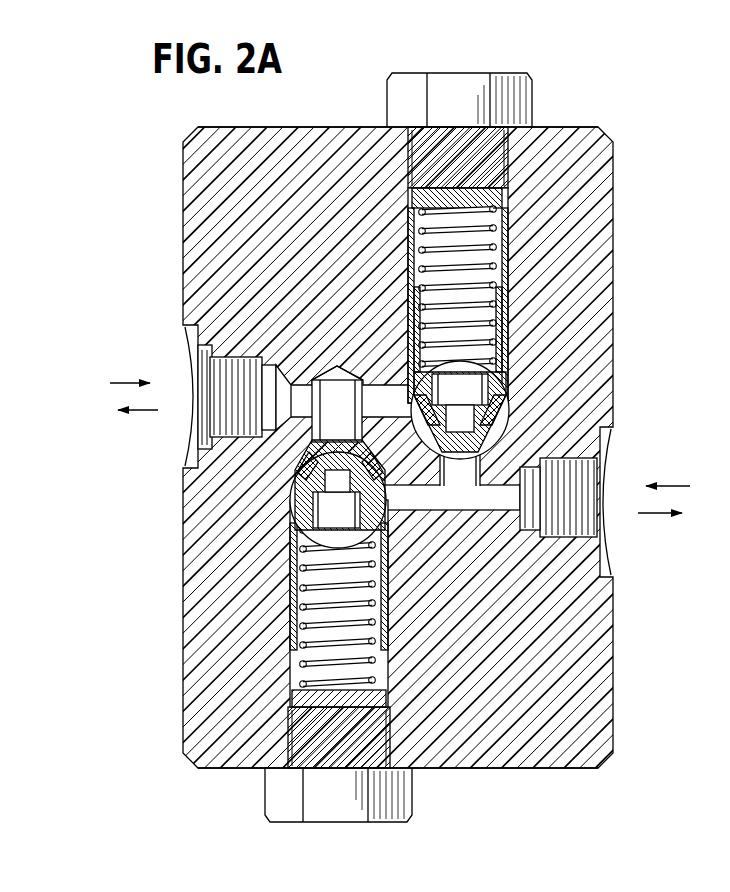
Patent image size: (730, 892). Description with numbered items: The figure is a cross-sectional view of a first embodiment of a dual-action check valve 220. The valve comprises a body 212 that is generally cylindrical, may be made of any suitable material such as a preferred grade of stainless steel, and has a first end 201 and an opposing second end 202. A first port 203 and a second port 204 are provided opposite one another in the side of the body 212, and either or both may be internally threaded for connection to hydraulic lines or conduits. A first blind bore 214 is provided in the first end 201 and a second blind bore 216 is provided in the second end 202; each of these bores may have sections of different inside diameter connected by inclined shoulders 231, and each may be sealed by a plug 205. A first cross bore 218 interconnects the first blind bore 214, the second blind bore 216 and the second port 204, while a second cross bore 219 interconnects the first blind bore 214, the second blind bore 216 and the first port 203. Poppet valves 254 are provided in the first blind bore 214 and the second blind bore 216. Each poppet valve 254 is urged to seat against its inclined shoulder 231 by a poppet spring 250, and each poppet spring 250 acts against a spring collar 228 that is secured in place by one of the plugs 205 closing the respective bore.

The first end 201 is at (265, 127).
The second end 202 is at (540, 768).
The first port 203 is at (203, 416).
The second port 204 is at (590, 482).
The plug 205 is at (455, 73).
The body 212 is at (607, 228).
The first blind bore 214 is at (505, 274).
The second blind bore 216 is at (298, 617).
The first cross bore 218 is at (405, 507).
The second cross bore 219 is at (400, 387).
The dual-action check valve 220 is at (562, 100).
The spring collar 228 is at (505, 198).
The inclined shoulder 231 is at (505, 410).
The poppet spring 250 is at (505, 314).
The poppet valve 254 is at (505, 376).